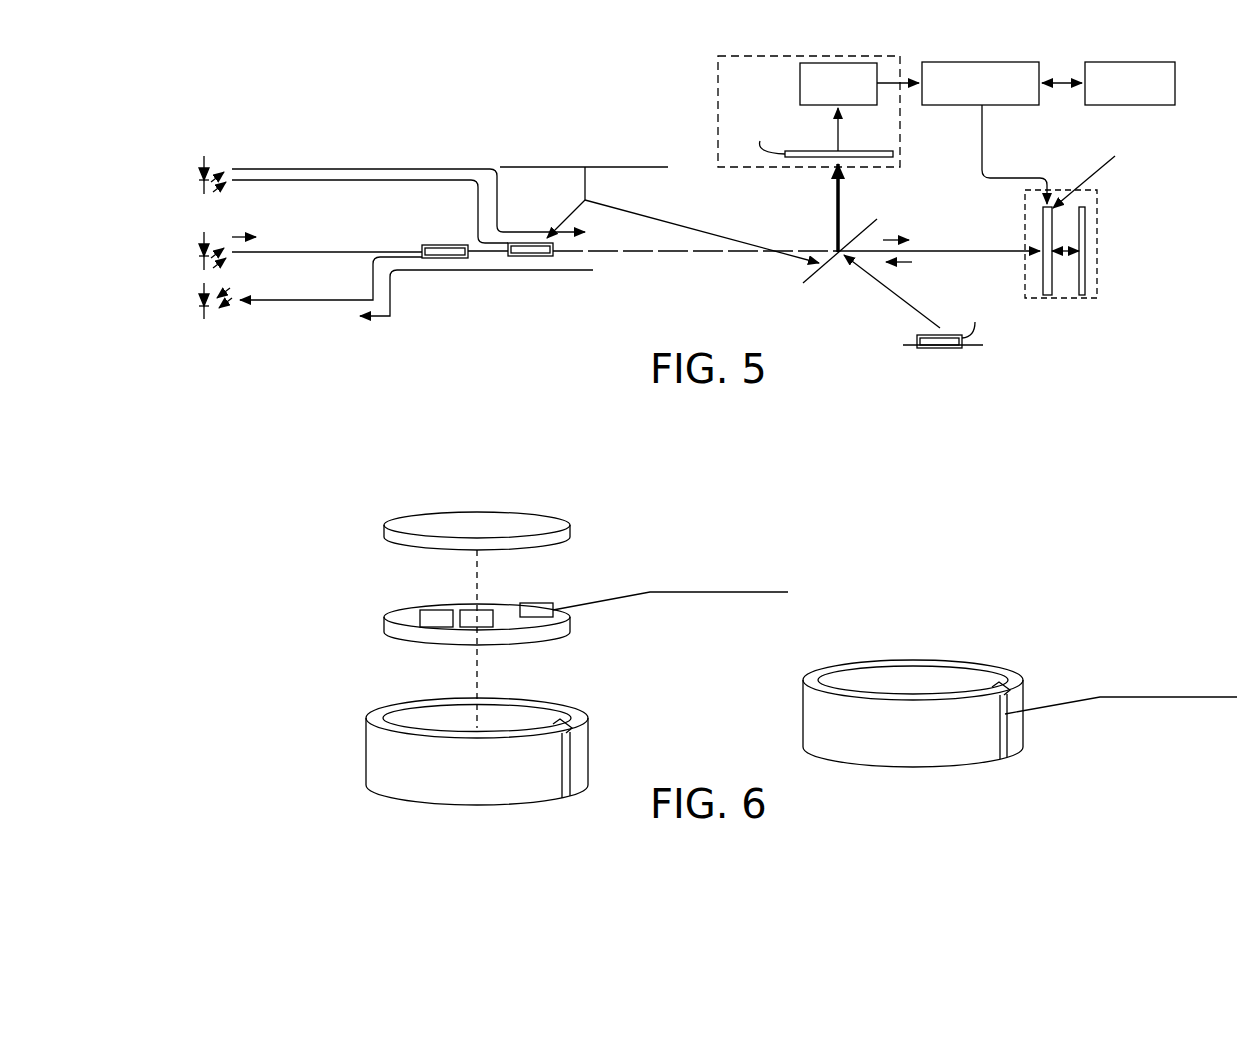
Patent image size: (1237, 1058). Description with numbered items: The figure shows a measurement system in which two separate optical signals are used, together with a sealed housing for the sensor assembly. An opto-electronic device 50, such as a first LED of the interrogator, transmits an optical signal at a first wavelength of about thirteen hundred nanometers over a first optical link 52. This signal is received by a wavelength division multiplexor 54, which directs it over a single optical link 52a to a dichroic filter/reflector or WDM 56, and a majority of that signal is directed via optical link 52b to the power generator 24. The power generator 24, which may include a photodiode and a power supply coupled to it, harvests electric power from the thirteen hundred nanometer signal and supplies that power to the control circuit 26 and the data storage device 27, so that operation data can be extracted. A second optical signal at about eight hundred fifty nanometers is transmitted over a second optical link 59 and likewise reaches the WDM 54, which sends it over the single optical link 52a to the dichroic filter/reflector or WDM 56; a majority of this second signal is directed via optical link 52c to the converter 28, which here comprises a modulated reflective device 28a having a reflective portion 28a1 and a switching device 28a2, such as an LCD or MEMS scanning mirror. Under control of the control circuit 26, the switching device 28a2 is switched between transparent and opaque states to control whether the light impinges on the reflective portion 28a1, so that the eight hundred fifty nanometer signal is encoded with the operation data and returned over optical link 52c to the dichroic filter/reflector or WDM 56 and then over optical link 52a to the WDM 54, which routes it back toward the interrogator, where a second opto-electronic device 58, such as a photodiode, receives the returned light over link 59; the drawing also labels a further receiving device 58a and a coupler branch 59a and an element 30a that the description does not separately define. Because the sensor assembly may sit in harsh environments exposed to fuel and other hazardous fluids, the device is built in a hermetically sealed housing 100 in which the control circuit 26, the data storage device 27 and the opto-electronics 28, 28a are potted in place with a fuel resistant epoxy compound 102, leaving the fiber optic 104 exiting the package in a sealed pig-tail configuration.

In FIG. 5, the opto-electronic device 50 is at (208, 168).
In FIG. 5, the first optical link 52 is at (394, 180).
In FIG. 5, the second opto-electronic device 58 is at (208, 245).
In FIG. 5, the 850nm detector 58a is at (199, 300).
In FIG. 5, the second optical link 59 is at (313, 252).
In FIG. 5, the return optical fiber / coupler 59a is at (390, 284).
In FIG. 5, the wavelength division multiplexor 54 is at (530, 257).
In FIG. 5, the single optical link 52a is at (697, 253).
In FIG. 5, the optical link 52b is at (840, 206).
In FIG. 5, the optical link 52c is at (1010, 255).
In FIG. 5, the dichroic filter/reflector or WDM 56 is at (878, 226).
In FIG. 5, the power generator 24 is at (718, 95).
In FIG. 5, the control circuit 26 is at (1020, 105).
In FIG. 6, the control circuit 26 is at (437, 615).
In FIG. 5, the data storage device 27 is at (1175, 92).
In FIG. 6, the data storage device 27 is at (470, 616).
In FIG. 5, the modulated reflective device 28a is at (1097, 214).
In FIG. 5, the reflective portion 28a1 is at (1085, 235).
In FIG. 5, the switching device 28a2 is at (1043, 224).
In FIG. 6, the converter 28 is at (565, 585).
In FIG. 6, the optical connector 30a is at (543, 606).
In FIG. 6, the hermetically sealed housing 100 is at (570, 706).
In FIG. 6, the fuel resistant epoxy compound 102 is at (570, 527).
In FIG. 6, the fiber optic 104 is at (650, 592).